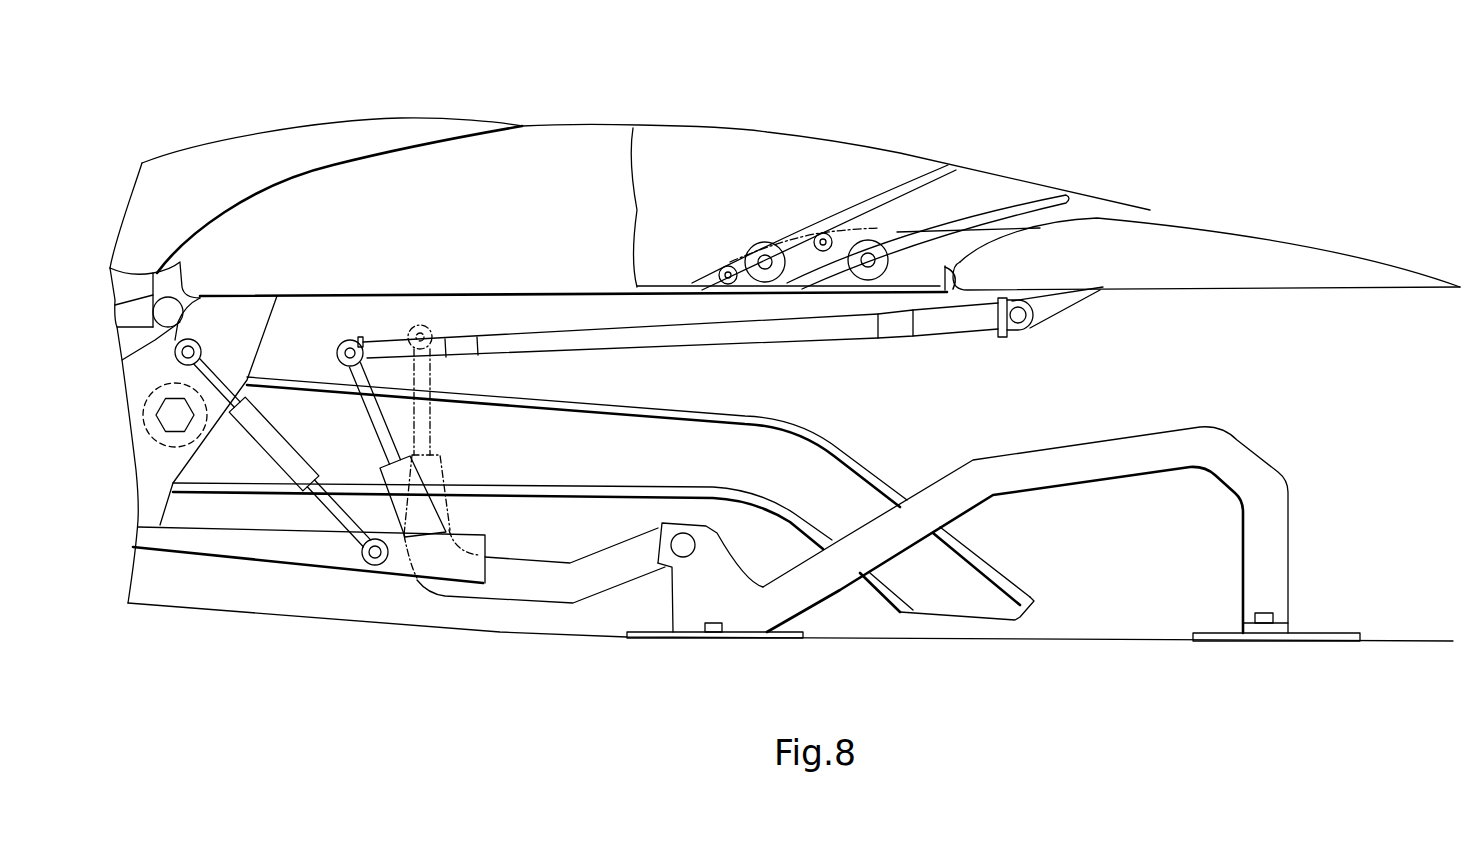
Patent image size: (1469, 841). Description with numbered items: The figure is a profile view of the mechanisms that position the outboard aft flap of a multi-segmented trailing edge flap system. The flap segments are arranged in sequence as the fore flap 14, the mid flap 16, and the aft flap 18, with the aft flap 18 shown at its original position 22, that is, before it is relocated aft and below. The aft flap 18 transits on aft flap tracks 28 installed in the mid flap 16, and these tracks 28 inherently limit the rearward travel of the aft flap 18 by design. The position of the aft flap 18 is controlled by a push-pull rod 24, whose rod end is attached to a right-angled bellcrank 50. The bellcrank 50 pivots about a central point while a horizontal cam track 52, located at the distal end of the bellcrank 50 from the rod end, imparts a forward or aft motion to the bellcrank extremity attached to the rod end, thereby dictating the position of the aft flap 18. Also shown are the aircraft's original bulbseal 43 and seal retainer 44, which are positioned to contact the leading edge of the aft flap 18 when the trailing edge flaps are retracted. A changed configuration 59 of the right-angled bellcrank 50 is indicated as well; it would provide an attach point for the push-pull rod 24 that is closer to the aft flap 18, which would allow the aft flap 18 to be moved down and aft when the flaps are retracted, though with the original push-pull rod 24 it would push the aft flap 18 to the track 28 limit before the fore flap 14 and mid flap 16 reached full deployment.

The fore flap 14 is at (228, 170).
The mid flap 16 is at (589, 158).
The aft flap track 28 is at (898, 205).
The original position 22 is at (1326, 247).
The aft flap 18 is at (1265, 282).
The push-pull rod 24 is at (853, 333).
The seal retainer 44 is at (931, 295).
The bulbseal 43 is at (956, 293).
The horizontal cam track 52 is at (1136, 455).
The right-angled bellcrank 50 is at (381, 427).
The configuration 59 is at (440, 438).